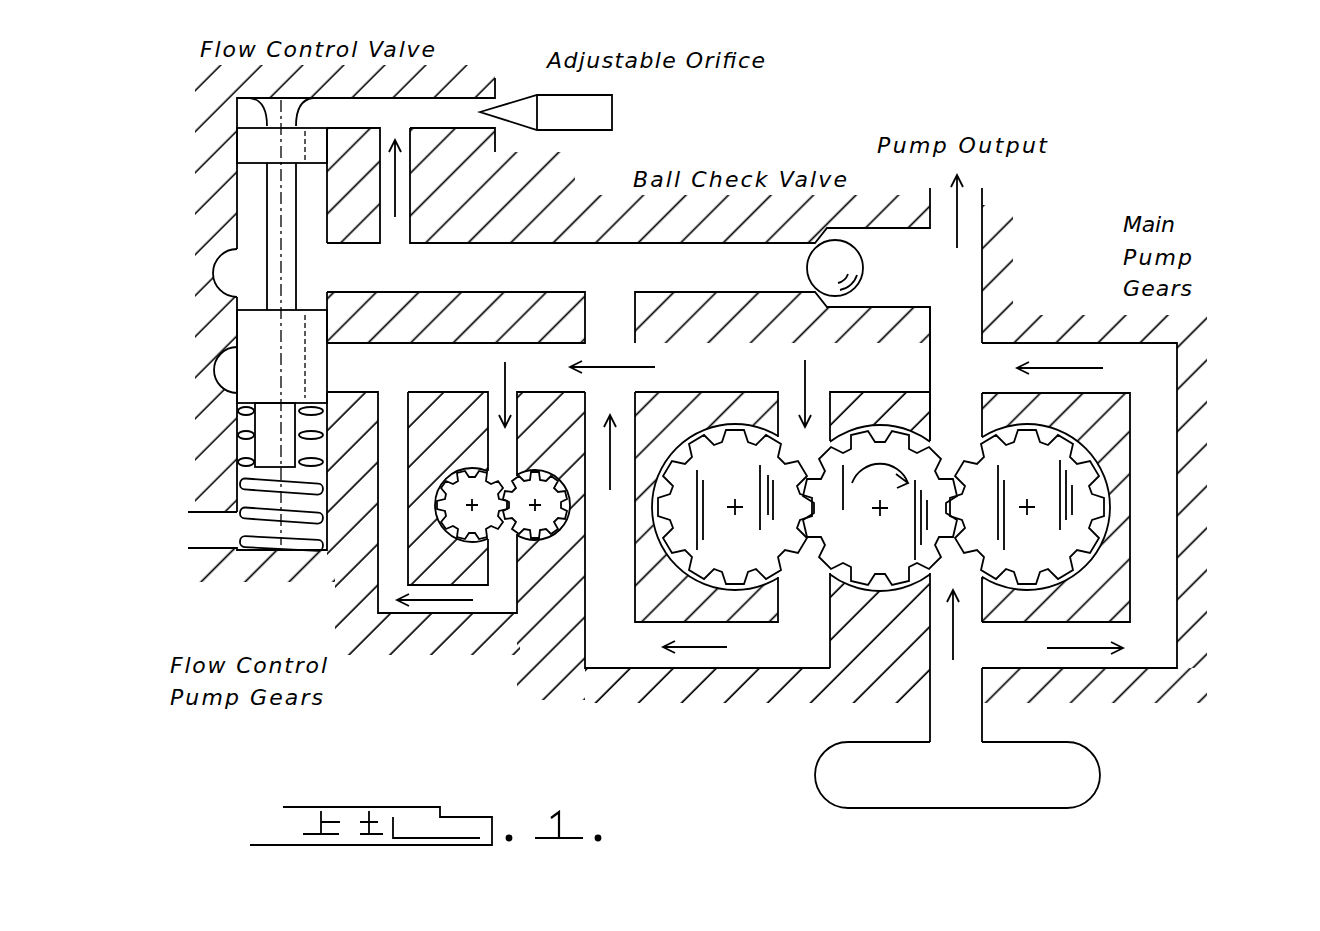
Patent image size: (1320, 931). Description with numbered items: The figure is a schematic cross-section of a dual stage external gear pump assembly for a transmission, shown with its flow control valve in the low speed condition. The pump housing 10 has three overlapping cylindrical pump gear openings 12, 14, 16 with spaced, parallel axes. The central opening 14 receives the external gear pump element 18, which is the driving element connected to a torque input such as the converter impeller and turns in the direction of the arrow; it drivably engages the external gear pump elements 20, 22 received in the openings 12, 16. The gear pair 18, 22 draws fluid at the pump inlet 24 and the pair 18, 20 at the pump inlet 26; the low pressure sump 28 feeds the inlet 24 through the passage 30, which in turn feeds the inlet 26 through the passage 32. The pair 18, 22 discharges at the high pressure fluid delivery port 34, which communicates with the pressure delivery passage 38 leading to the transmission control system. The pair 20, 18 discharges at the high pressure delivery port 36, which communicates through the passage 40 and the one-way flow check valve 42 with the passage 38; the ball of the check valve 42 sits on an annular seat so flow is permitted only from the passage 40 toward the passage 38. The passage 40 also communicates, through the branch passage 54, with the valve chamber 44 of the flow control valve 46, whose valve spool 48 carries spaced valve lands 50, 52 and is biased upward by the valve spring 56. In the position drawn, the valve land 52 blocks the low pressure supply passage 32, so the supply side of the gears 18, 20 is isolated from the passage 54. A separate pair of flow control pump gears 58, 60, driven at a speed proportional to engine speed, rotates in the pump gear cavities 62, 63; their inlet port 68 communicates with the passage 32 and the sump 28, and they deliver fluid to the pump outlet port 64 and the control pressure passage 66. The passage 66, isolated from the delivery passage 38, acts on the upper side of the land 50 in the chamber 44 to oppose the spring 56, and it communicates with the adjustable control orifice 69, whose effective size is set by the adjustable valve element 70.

The pump housing 10 is at (562, 218).
The pump gear opening 12 is at (742, 583).
The pump gear opening 14 is at (873, 587).
The pump gear opening 16 is at (1100, 535).
The external gear pump element 18 is at (896, 556).
The external gear pump element 20 is at (748, 556).
The external gear pump element 22 is at (1054, 556).
The pump inlet 24 is at (962, 578).
The pump inlet 26 is at (783, 417).
The low pressure sump 28 is at (1068, 770).
The passage 30 is at (947, 718).
The passage 32 is at (1153, 443).
The high pressure fluid delivery port 34 is at (957, 437).
The high pressure delivery port 36 is at (805, 572).
The pressure delivery passage 38 is at (967, 240).
The passage 40 is at (607, 637).
The one-way flow check valve 42 is at (863, 268).
The valve chamber 44 is at (244, 207).
The flow control valve 46 is at (240, 107).
The valve spool 48 is at (270, 272).
The valve land 50 is at (250, 148).
The valve land 52 is at (250, 340).
The branch passage 54 is at (447, 267).
The valve spring 56 is at (215, 548).
The flow control pump gear 58 is at (467, 540).
The flow control pump gear 60 is at (550, 533).
The pump gear cavity 62 is at (447, 523).
The pump gear cavity 63 is at (565, 517).
The pump outlet port 64 is at (503, 545).
The control pressure passage 66 is at (395, 437).
The inlet port 68 is at (502, 467).
The adjustable control orifice 69 is at (470, 97).
The adjustable valve element 70 is at (612, 113).